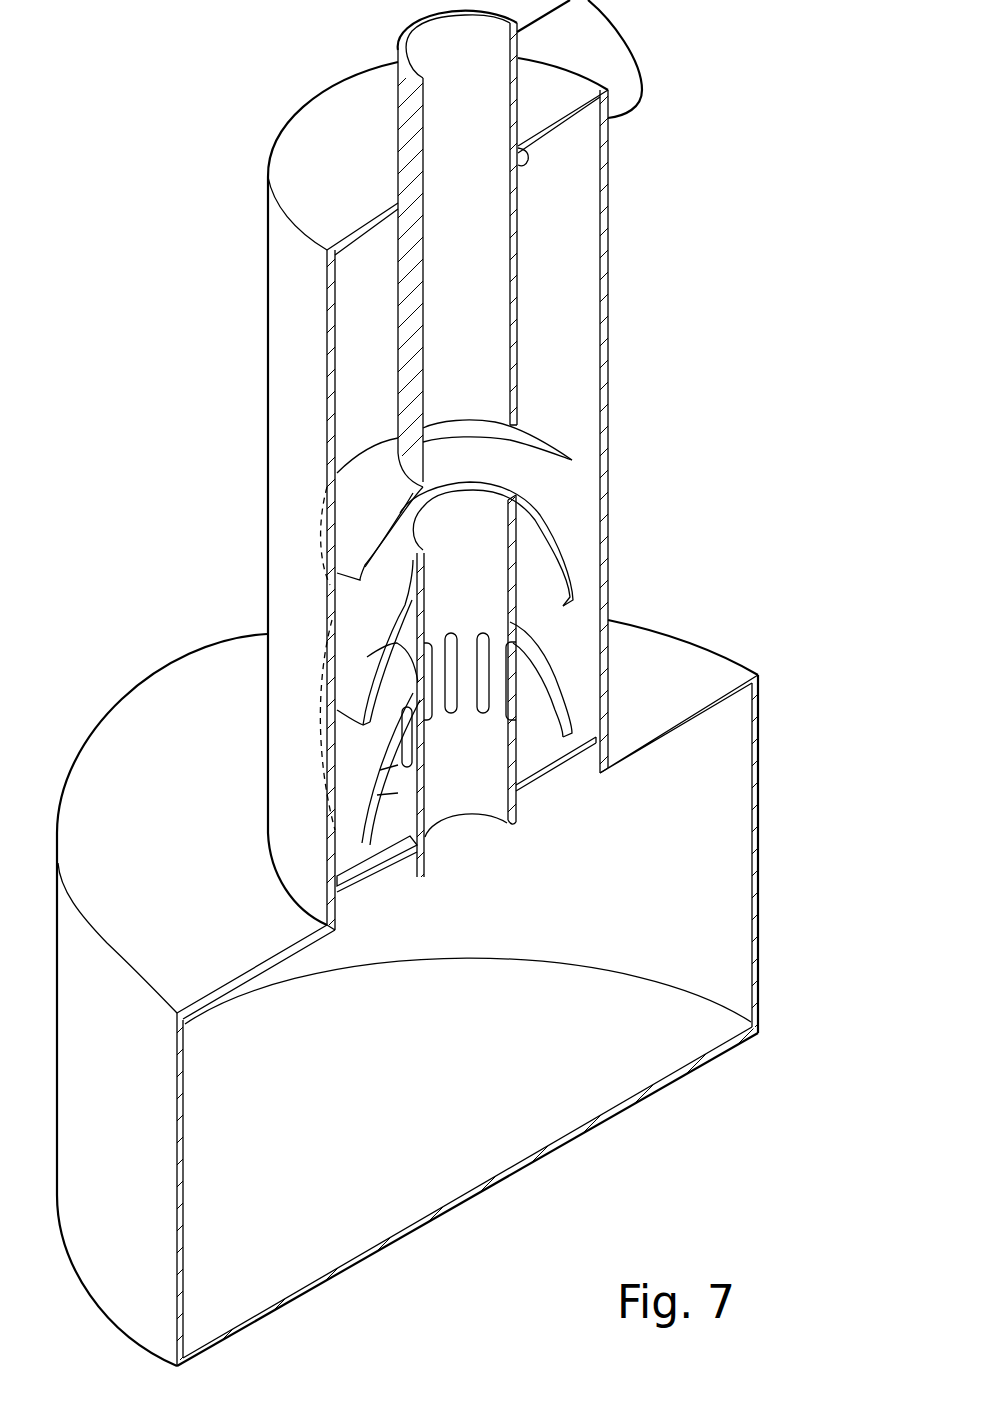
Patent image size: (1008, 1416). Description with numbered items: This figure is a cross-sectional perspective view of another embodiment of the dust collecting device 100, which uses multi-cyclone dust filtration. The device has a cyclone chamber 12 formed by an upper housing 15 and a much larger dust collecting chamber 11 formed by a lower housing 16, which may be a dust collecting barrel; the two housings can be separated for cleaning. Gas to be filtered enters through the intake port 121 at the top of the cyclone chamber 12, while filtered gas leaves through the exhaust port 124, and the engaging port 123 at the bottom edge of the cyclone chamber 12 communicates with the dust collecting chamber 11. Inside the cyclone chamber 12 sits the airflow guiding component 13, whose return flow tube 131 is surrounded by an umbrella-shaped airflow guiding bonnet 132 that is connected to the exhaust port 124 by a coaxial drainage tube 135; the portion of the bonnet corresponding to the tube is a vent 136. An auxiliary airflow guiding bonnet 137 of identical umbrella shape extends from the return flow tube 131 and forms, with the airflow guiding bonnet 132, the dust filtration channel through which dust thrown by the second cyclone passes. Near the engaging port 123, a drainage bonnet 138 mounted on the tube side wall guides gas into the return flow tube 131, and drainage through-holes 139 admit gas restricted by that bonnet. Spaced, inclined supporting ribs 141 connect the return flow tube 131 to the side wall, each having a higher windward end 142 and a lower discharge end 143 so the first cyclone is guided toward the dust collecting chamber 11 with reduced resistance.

The dust collecting device 100 is at (872, 91).
The dust collecting chamber 11 is at (735, 770).
The cyclone chamber 12 is at (582, 195).
The intake port 121 is at (625, 67).
The engaging port 123 is at (585, 768).
The exhaust port 124 is at (423, 45).
The airflow guiding component 13 is at (181, 455).
The return flow tube 131 is at (410, 625).
The airflow guiding bonnet 132 is at (355, 497).
The drainage tube 135 is at (520, 318).
The vent 136 is at (493, 410).
The auxiliary airflow guiding bonnet 137 is at (347, 667).
The drainage bonnet 138 is at (548, 662).
The drainage through-hole 139 is at (458, 712).
The supporting rib 141 is at (610, 712).
The windward end 142 is at (362, 872).
The discharge end 143 is at (392, 884).
The housing 15 is at (268, 345).
The housing 16 is at (758, 892).